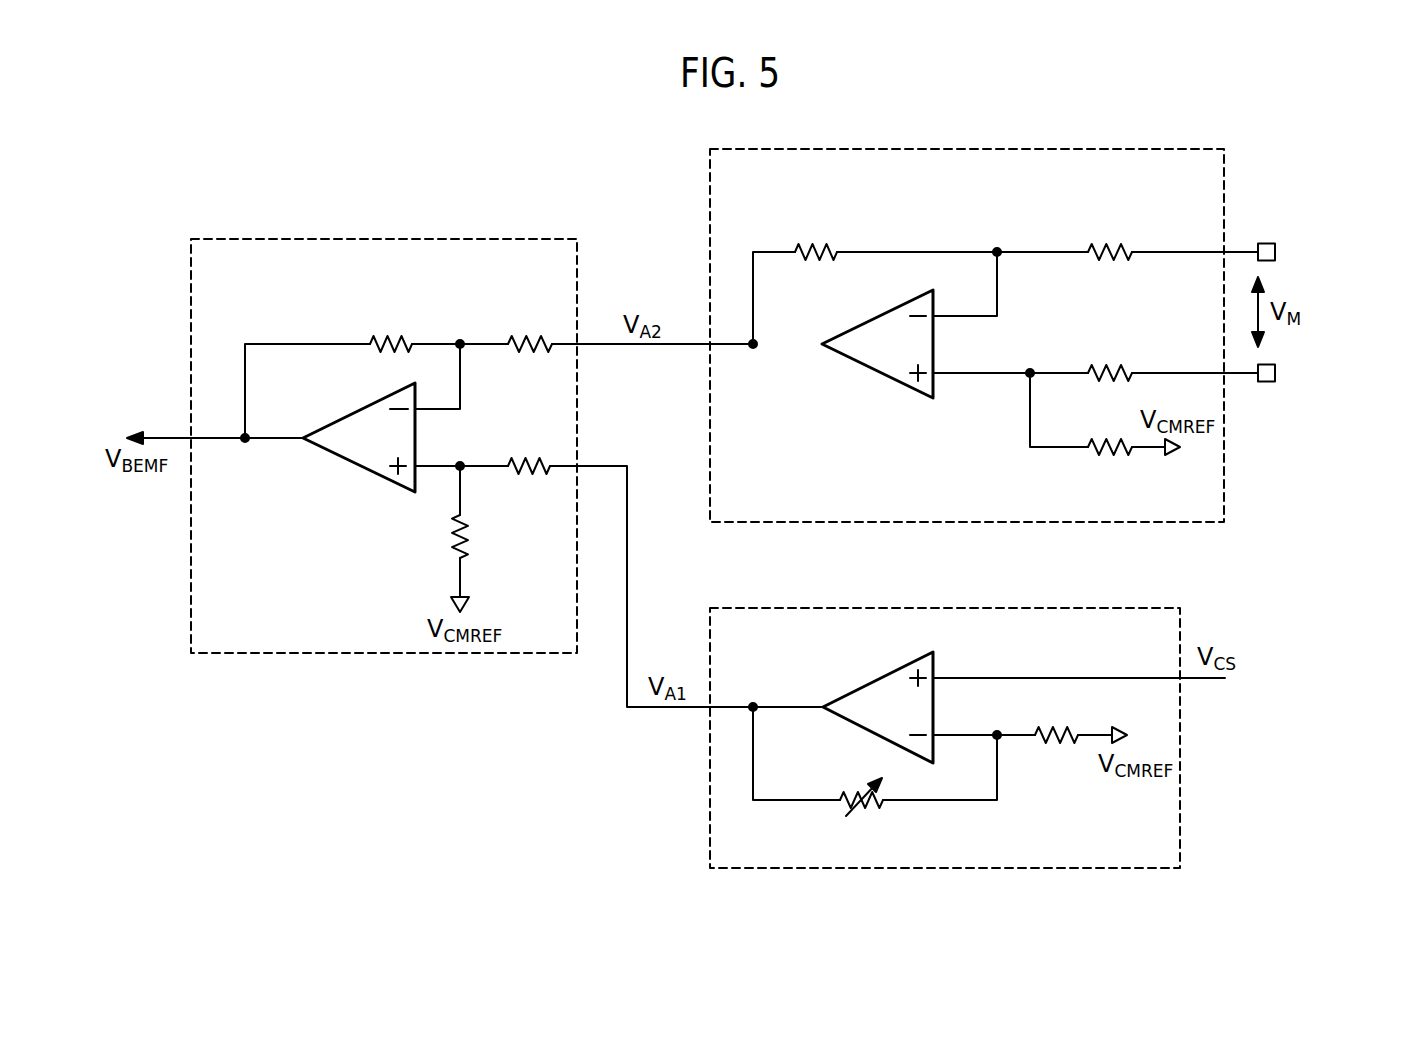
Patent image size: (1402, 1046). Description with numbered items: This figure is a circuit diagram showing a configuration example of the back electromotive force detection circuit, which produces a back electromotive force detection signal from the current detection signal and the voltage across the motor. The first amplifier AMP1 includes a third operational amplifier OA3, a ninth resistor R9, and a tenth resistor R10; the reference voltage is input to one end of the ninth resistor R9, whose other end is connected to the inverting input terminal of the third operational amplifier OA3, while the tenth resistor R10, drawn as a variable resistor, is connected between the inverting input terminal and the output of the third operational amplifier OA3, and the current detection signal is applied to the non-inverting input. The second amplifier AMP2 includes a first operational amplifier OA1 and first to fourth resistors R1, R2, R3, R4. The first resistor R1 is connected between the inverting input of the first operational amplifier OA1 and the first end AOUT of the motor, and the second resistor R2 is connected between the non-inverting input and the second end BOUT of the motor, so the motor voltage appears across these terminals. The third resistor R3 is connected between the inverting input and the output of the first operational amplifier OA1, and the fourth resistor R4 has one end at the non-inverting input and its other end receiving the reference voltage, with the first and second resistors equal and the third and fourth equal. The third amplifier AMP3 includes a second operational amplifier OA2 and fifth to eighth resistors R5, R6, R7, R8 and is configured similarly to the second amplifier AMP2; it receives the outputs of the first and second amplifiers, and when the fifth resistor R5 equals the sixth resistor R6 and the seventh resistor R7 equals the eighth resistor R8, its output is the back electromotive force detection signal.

The first amplifier AMP1 is at (1020, 608).
The second amplifier AMP2 is at (1020, 149).
The third amplifier AMP3 is at (398, 239).
The first operational amplifier OA1 is at (872, 370).
The second operational amplifier OA2 is at (350, 466).
The third operational amplifier OA3 is at (875, 680).
The first resistor R1 is at (1110, 235).
The second resistor R2 is at (1110, 357).
The third resistor R3 is at (816, 235).
The fourth resistor R4 is at (1110, 464).
The fifth resistor R5 is at (530, 329).
The sixth resistor R6 is at (529, 452).
The seventh resistor R7 is at (391, 329).
The eighth resistor R8 is at (480, 539).
The ninth resistor R9 is at (1056, 752).
The tenth resistor R10 is at (861, 812).
The first end of the linear motor AOUT is at (1277, 250).
The second end of the linear motor BOUT is at (1277, 375).